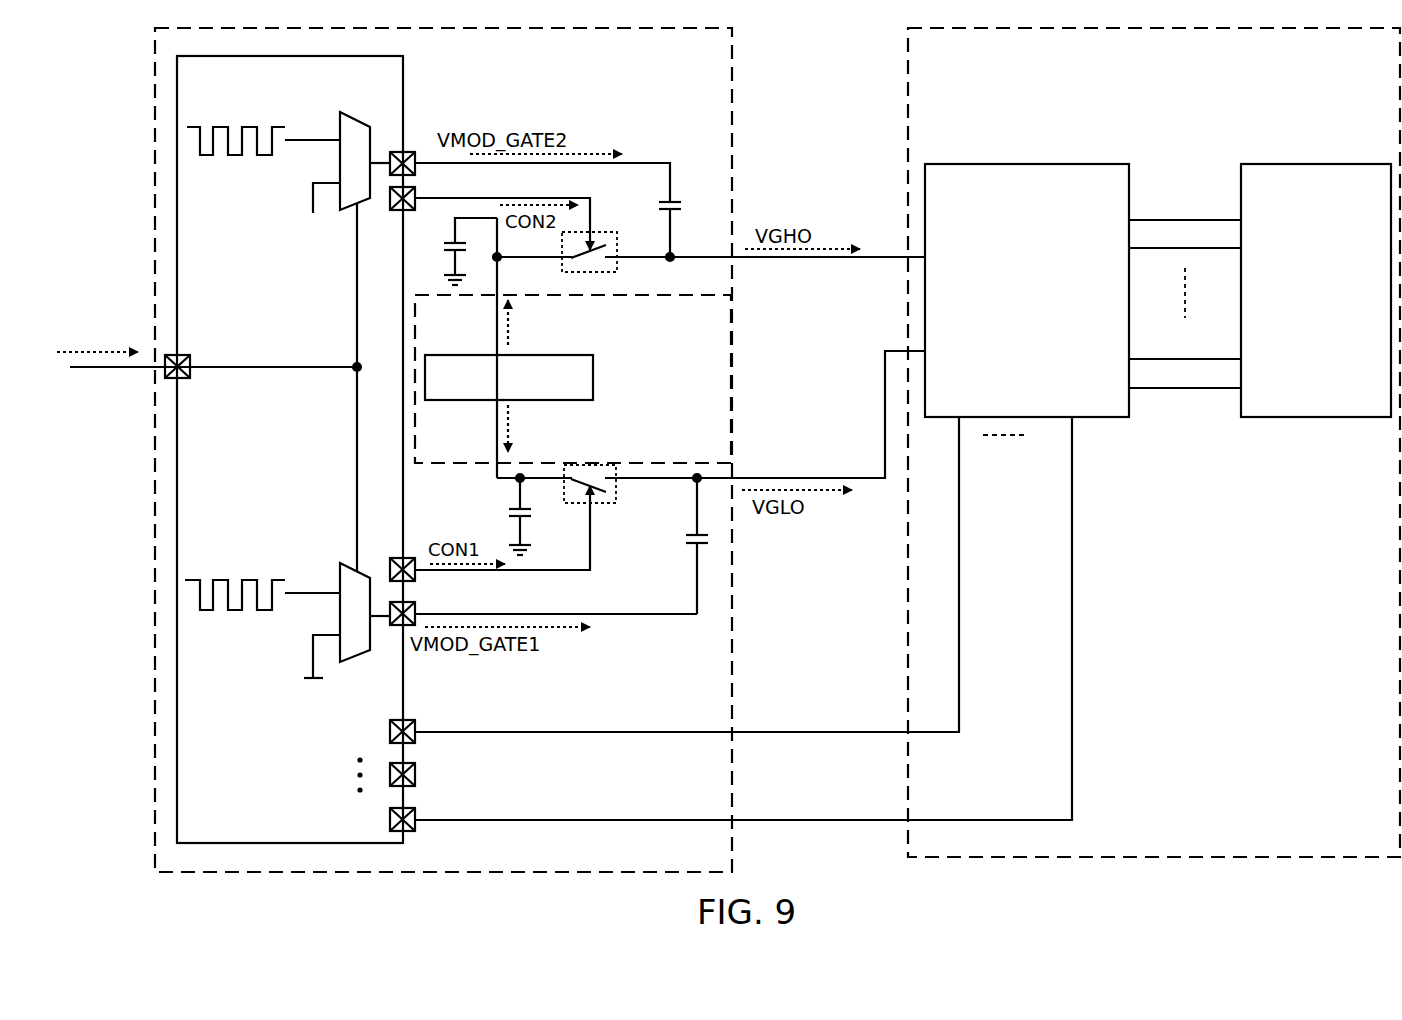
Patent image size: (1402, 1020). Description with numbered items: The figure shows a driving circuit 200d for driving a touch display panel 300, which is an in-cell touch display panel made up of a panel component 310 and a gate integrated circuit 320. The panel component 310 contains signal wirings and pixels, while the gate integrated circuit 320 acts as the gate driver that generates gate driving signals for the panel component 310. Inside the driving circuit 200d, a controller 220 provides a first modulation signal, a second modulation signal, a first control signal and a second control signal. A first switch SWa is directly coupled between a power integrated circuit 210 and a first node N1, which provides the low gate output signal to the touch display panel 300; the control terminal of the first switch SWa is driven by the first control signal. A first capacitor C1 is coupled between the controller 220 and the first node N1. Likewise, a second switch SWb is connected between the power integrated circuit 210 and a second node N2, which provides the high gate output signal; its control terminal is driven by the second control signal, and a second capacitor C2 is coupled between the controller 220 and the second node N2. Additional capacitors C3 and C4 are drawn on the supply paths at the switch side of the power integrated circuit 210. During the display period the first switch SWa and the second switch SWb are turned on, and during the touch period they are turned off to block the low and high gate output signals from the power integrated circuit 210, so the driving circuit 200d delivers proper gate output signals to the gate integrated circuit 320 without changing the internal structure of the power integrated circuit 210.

The driving circuit 200d is at (732, 100).
The controller 220 is at (403, 112).
The power integrated circuit 210 is at (593, 378).
The touch display panel 300 is at (908, 183).
The gate integrated circuit 320 is at (1045, 164).
The panel component 310 is at (1268, 164).
The first node N1 is at (697, 476).
The second node N2 is at (672, 262).
The first switch SWa is at (608, 503).
The second switch SWb is at (602, 236).
The first capacitor C1 is at (684, 546).
The second capacitor C2 is at (684, 205).
The third capacitor C3 is at (508, 514).
The fourth capacitor C4 is at (458, 251).